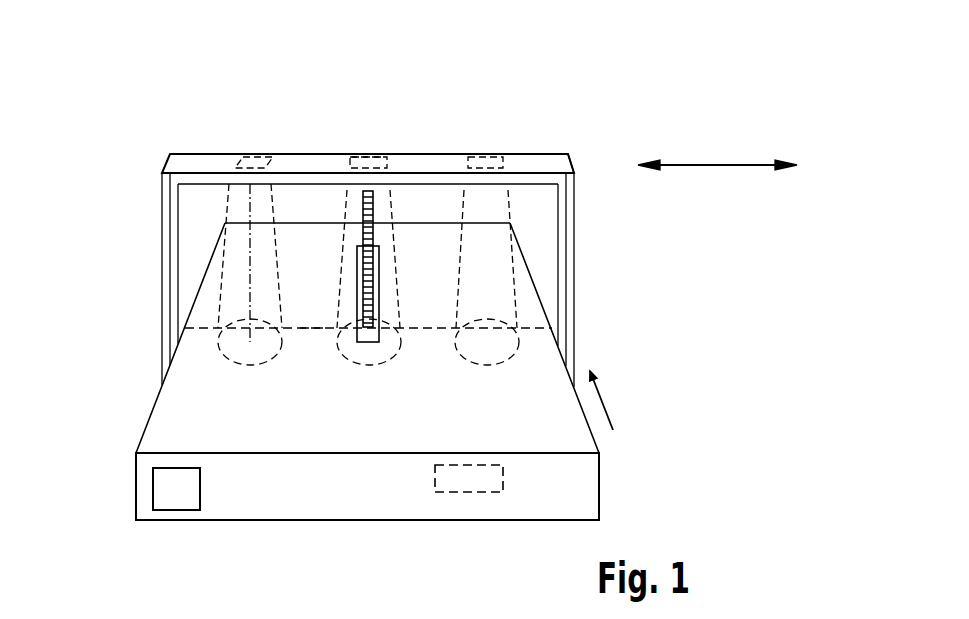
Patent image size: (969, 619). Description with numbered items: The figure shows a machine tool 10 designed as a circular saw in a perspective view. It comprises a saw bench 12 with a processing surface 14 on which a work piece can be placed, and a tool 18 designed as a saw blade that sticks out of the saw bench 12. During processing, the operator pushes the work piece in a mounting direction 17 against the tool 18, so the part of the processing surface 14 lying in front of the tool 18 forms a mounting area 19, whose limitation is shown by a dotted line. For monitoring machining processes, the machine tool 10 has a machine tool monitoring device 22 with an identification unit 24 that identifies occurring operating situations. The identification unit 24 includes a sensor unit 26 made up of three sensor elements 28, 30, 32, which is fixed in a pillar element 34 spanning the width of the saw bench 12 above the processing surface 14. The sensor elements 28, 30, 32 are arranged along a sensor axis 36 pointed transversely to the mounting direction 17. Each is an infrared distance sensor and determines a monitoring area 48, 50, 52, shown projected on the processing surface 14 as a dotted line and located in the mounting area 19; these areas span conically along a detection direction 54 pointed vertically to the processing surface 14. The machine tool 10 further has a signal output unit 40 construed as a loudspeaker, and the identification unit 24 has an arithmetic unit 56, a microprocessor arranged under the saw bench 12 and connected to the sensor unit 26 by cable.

The machine tool 10 is at (685, 110).
The saw bench 12 is at (602, 434).
The processing surface 14 is at (182, 418).
The mounting direction 17 is at (603, 395).
The tool 18 is at (373, 213).
The mounting area 19 is at (312, 318).
The machine tool monitoring device 22 is at (150, 140).
The identification unit 24 is at (522, 132).
The sensor unit 26 is at (356, 148).
The sensor element 28 is at (250, 157).
The sensor element 30 is at (378, 157).
The sensor element 32 is at (484, 157).
The pillar element 34 is at (568, 164).
The sensor axis 36 is at (717, 166).
The signal output unit 40 is at (166, 490).
The monitoring area 48 is at (221, 266).
The monitoring area 50 is at (398, 280).
The monitoring area 52 is at (516, 283).
The detection direction 54 is at (250, 290).
The arithmetic unit 56 is at (475, 481).